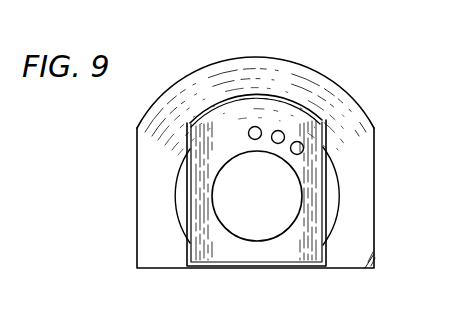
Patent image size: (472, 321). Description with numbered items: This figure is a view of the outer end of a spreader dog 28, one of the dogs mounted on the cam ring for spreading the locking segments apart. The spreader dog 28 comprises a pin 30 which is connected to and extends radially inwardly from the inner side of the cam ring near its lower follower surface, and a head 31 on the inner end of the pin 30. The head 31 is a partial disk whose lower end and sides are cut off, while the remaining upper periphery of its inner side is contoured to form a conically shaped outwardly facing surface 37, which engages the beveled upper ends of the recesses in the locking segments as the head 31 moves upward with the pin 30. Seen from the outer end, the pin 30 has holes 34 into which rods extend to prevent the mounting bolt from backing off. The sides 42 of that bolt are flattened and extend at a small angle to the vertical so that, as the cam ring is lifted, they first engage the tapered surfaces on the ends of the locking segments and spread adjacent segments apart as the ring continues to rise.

The spreader dog 28 is at (376, 249).
The pin 30 is at (183, 190).
The head 31 is at (318, 73).
The holes 34 is at (257, 129).
The conically shaped outwardly facing surface 37 is at (353, 127).
The sides of the bolt 42 is at (323, 195).